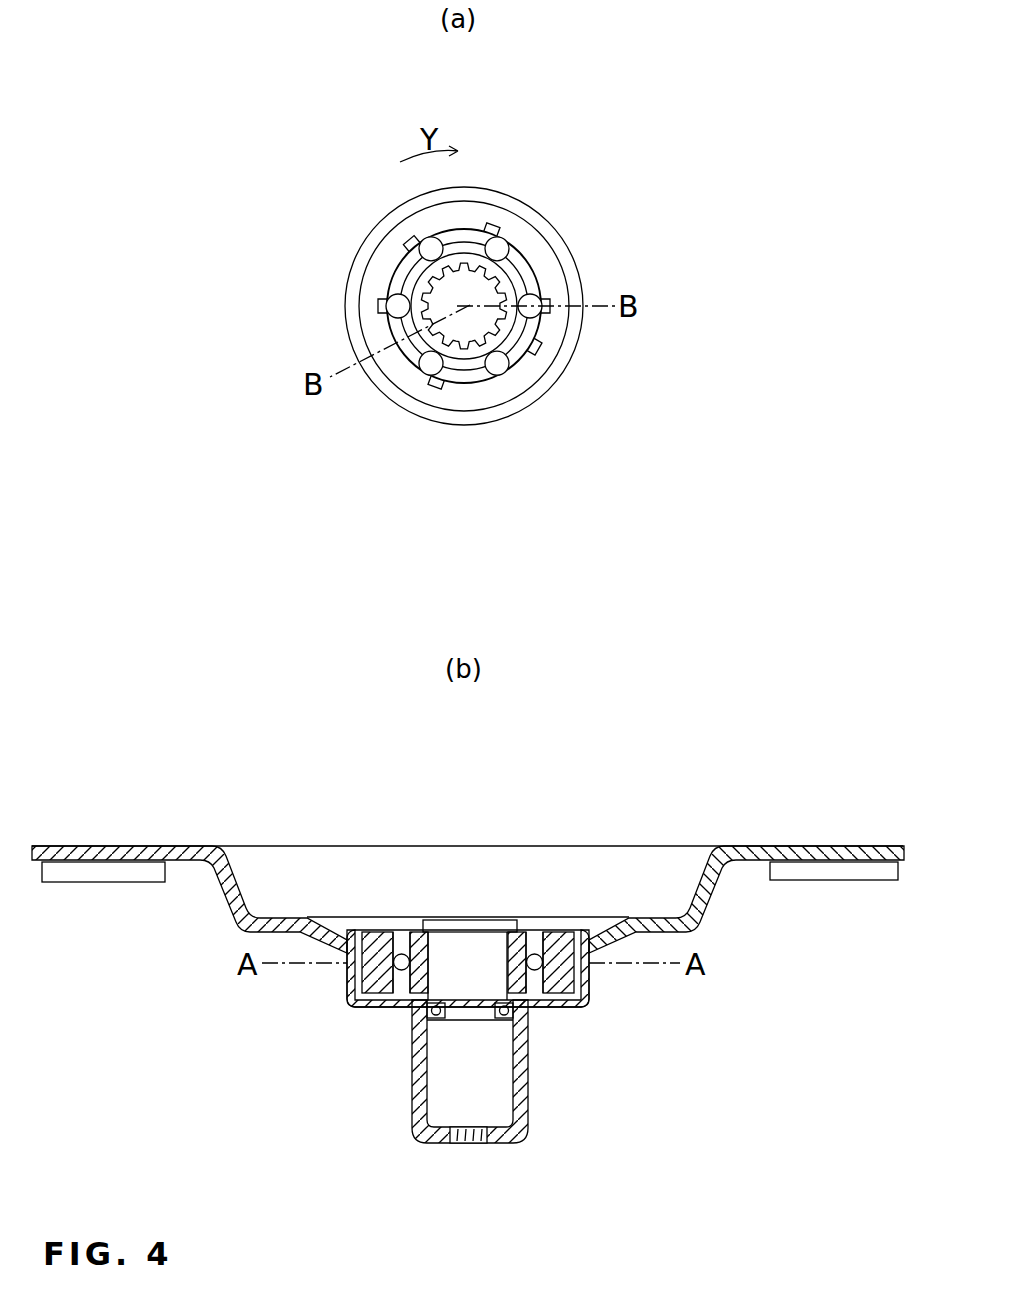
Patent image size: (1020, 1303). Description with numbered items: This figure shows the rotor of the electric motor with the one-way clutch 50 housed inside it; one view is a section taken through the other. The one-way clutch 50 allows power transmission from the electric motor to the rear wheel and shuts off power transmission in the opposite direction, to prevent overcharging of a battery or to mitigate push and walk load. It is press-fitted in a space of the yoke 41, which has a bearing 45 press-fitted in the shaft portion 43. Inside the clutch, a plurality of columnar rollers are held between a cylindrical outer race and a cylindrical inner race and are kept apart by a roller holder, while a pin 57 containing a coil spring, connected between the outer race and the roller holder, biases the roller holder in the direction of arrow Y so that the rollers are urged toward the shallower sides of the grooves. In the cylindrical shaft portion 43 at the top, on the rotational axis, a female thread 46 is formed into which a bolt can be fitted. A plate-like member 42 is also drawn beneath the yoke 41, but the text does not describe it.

The magnet 41 is at (872, 845).
The magnet 42 is at (88, 884).
The shaft 43 is at (527, 1097).
The seal ring 45 is at (443, 1020).
The screw hole 46 is at (470, 1145).
The bearing 50 is at (345, 988).
The projection 57 is at (533, 347).